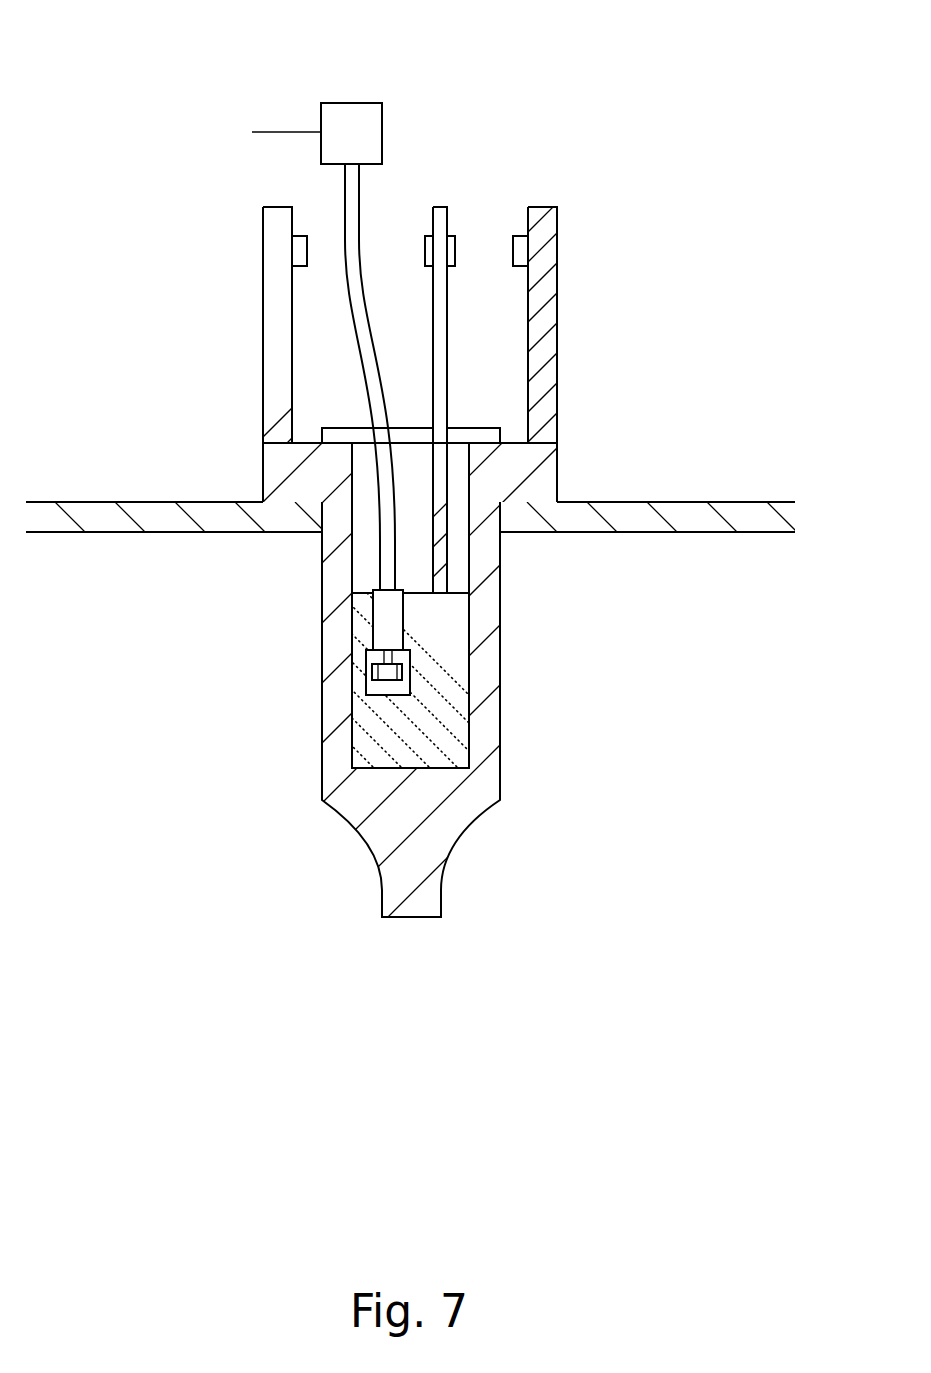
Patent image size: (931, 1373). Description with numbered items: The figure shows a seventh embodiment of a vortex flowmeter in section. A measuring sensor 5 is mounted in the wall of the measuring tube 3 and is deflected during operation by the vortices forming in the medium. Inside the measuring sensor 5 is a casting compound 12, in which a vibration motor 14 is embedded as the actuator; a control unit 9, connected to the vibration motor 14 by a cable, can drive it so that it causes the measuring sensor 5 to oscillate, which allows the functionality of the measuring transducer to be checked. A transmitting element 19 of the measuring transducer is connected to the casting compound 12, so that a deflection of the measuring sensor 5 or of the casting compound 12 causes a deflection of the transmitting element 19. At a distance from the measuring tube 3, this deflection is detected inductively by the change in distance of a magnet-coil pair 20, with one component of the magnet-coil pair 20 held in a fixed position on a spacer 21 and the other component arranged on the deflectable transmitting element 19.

The measuring tube 3 is at (752, 502).
The measuring sensor 5 is at (400, 862).
The control unit 9 is at (343, 118).
The casting compound 12 is at (447, 698).
The vibration motor 14 is at (382, 623).
The transmitting element 19 is at (447, 367).
The magnet-coil pair 20 is at (428, 236).
The spacer 21 is at (550, 286).